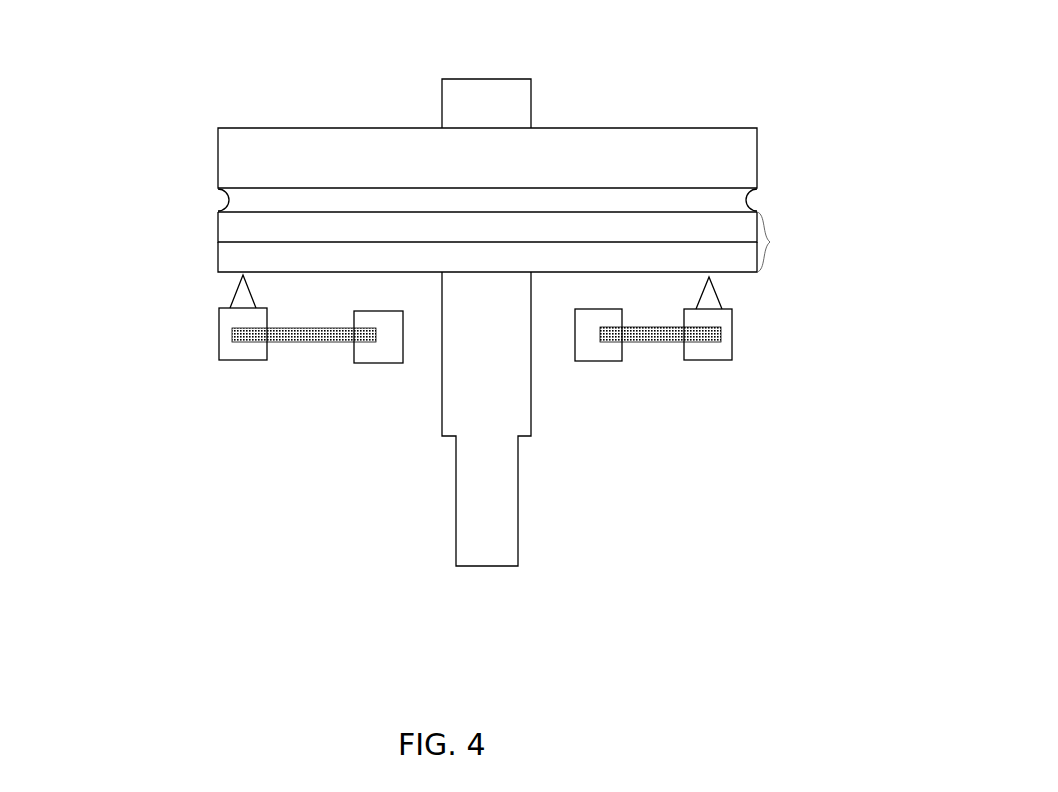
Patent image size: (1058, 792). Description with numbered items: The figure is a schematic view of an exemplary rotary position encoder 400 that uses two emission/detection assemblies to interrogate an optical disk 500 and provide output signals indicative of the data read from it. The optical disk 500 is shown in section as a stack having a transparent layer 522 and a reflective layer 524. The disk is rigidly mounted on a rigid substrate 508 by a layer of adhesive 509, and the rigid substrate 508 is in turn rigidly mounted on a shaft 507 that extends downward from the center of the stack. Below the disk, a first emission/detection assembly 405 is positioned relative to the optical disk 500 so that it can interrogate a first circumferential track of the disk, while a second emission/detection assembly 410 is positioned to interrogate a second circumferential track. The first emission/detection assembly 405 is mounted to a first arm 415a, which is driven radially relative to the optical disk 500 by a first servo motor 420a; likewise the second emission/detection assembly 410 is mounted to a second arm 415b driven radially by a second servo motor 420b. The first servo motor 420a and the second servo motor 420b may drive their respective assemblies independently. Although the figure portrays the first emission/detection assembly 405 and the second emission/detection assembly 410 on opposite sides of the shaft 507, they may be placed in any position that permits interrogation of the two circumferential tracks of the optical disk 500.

The rotary position encoder 400 is at (358, 90).
The optical disk 500 is at (770, 242).
The rigid substrate 508 is at (250, 140).
The adhesive 509 is at (245, 203).
The reflective layer 524 is at (220, 226).
The transparent layer 522 is at (232, 262).
The shaft 507 is at (465, 545).
The first emission/detection assembly 405 is at (219, 335).
The second emission/detection assembly 410 is at (732, 336).
The first arm 415a is at (308, 340).
The second arm 415b is at (652, 337).
The first servo motor 420a is at (375, 352).
The second servo motor 420b is at (592, 348).